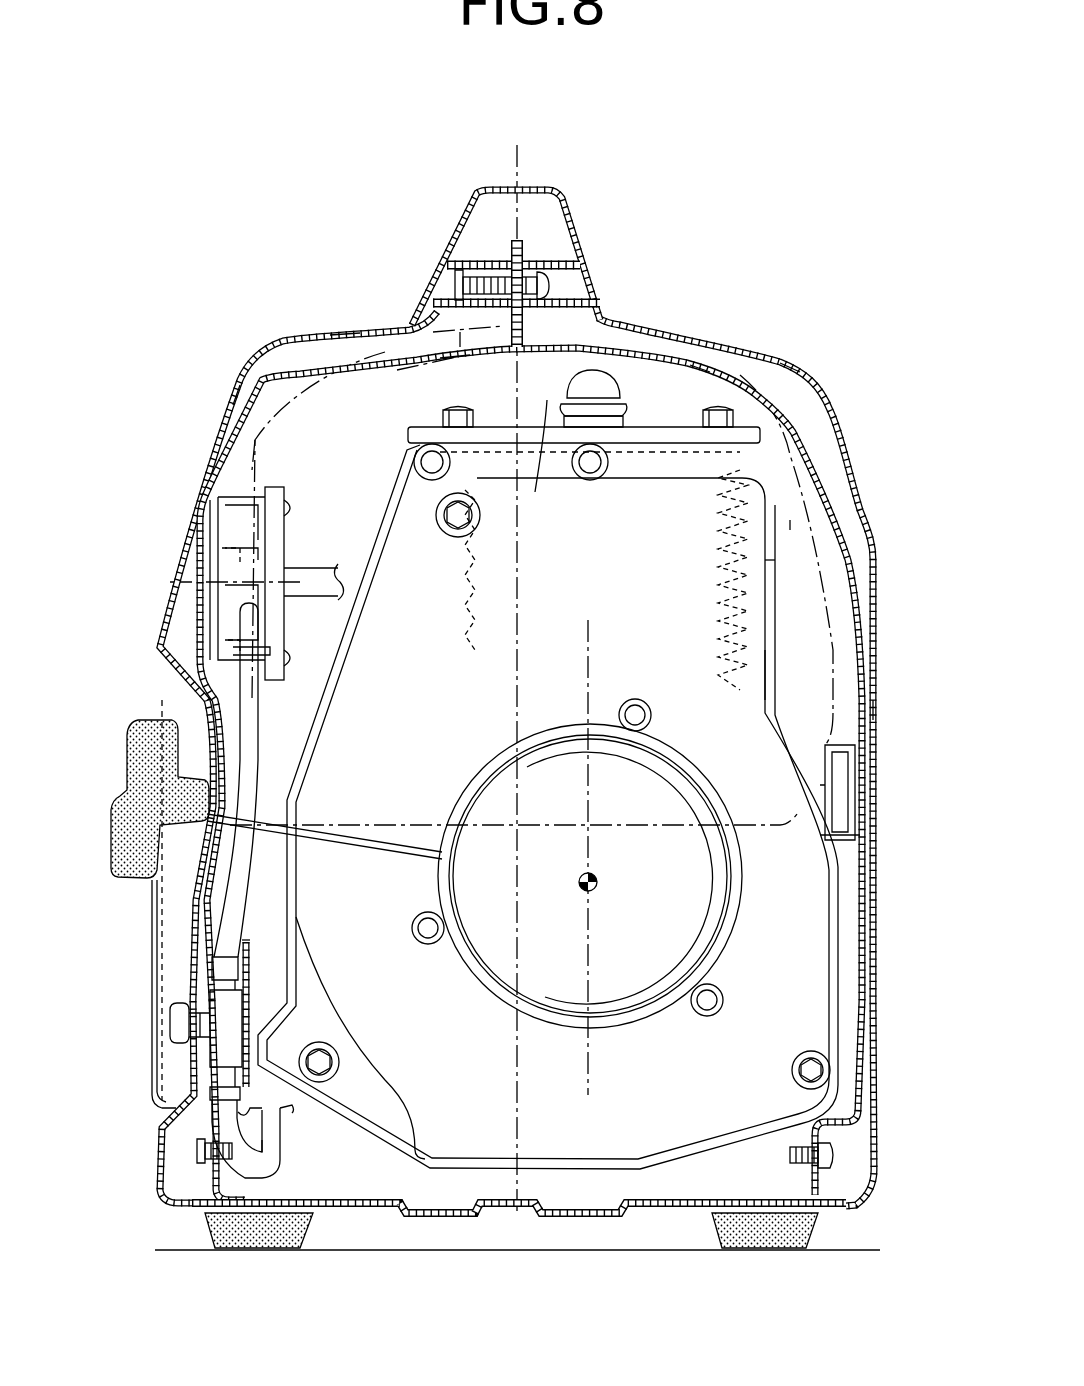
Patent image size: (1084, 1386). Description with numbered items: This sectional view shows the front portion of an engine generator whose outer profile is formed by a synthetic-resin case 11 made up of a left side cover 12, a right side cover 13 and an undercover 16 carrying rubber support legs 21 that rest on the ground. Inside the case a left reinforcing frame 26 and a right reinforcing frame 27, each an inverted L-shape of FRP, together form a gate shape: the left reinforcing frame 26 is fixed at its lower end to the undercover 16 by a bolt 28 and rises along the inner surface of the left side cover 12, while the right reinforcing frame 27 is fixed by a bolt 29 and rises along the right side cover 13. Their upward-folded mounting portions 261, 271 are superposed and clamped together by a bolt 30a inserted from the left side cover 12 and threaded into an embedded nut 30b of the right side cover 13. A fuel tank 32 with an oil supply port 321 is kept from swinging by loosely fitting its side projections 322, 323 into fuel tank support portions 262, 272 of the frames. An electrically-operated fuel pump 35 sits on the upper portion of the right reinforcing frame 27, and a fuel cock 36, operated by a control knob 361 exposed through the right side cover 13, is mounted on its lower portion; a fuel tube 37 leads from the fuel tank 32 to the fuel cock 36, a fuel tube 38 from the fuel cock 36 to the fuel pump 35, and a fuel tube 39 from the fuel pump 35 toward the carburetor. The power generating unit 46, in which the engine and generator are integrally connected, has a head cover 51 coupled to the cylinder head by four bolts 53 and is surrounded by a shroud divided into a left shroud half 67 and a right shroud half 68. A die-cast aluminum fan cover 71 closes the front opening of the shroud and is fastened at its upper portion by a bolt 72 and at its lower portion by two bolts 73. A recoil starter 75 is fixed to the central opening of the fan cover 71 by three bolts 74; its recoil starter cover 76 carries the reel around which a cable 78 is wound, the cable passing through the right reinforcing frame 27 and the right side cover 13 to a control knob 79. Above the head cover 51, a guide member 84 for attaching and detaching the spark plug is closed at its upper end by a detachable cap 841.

The case 11 is at (339, 316).
The left side cover 12 is at (783, 362).
The right side cover 13 is at (233, 393).
The undercover 16 is at (440, 1218).
The support legs 21 is at (290, 1232).
The left reinforcing frame 26 is at (818, 440).
The mounting portion 261 is at (523, 250).
The fuel tank support portion 262 is at (877, 713).
The right reinforcing frame 27 is at (281, 367).
The mounting portion 271 is at (510, 247).
The fuel tank support portion 272 is at (210, 548).
The bolt 28 is at (792, 1154).
The bolt 29 is at (233, 1160).
The bolt 30a is at (550, 285).
The embedded nut 30b is at (482, 270).
The fuel tank 32 is at (252, 452).
The oil supply port 321 is at (436, 330).
The projection 322 is at (845, 800).
The projection 323 is at (268, 642).
The electrically-operated fuel pump 35 is at (227, 530).
The fuel cock 36 is at (210, 1055).
The control knob 361 is at (176, 1014).
The fuel tube 37 is at (277, 1130).
The fuel tube 38 is at (262, 727).
The fuel tube 39 is at (307, 580).
The power generating unit 46 is at (783, 525).
The head cover 51 is at (698, 377).
The bolts 53 is at (448, 410).
The left shroud half 67 is at (777, 567).
The right shroud half 68 is at (393, 517).
The fan cover 71 is at (747, 705).
The bolt 72 is at (455, 537).
The bolts 73 is at (342, 1066).
The bolts 74 is at (640, 713).
The recoil starter 75 is at (507, 792).
The recoil starter cover 76 is at (535, 985).
The cable 78 is at (347, 842).
The control knob 79 is at (130, 767).
The guide member 84 is at (612, 391).
The cap 841 is at (550, 465).